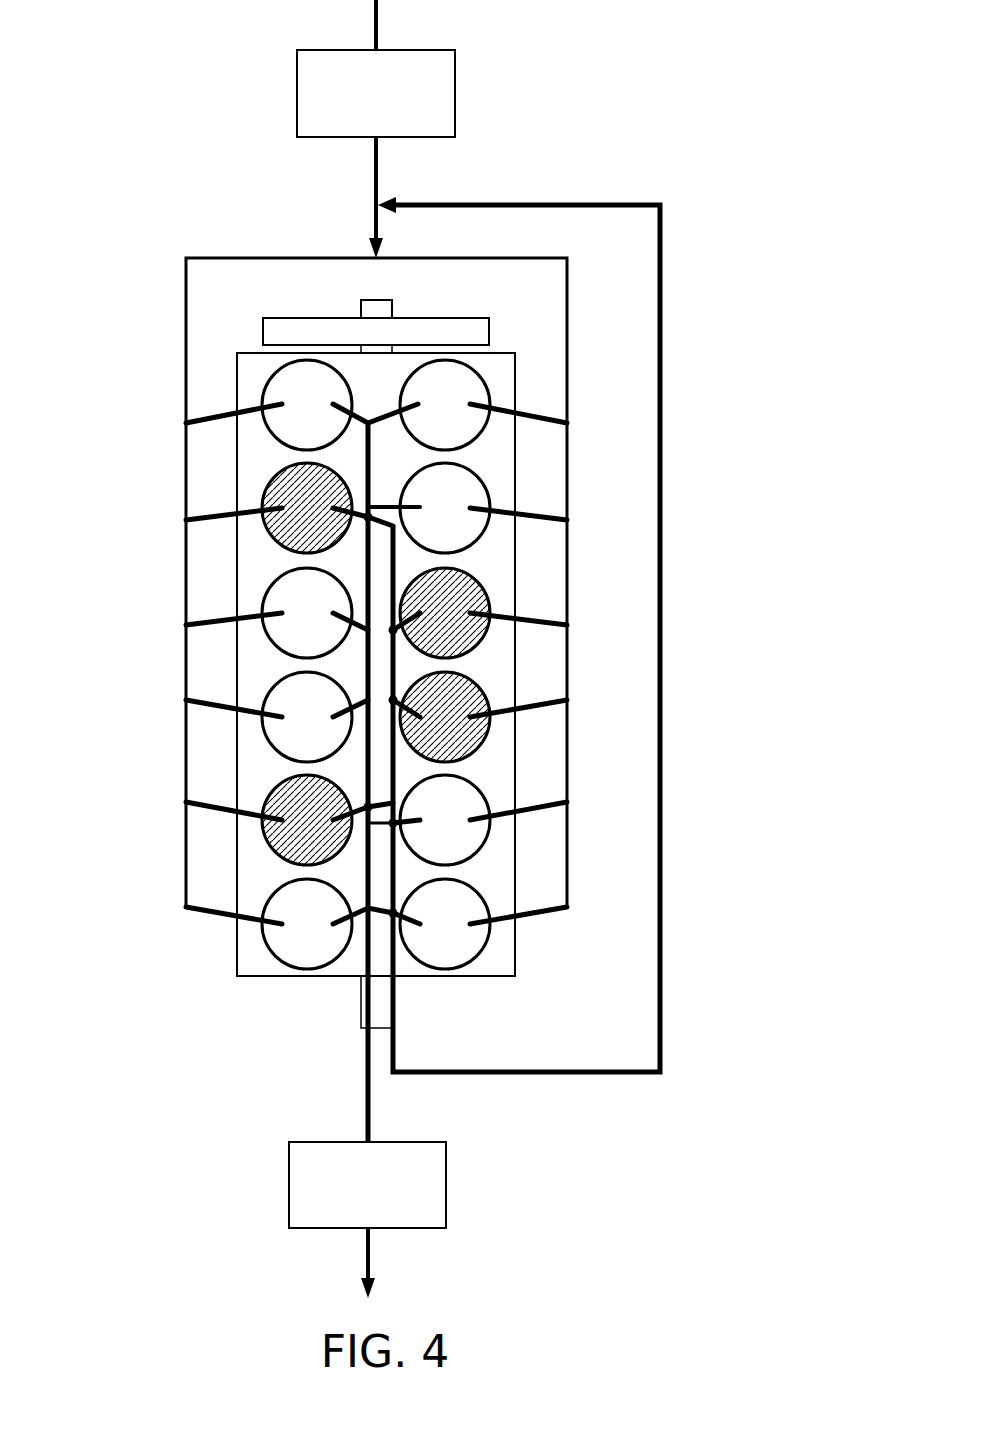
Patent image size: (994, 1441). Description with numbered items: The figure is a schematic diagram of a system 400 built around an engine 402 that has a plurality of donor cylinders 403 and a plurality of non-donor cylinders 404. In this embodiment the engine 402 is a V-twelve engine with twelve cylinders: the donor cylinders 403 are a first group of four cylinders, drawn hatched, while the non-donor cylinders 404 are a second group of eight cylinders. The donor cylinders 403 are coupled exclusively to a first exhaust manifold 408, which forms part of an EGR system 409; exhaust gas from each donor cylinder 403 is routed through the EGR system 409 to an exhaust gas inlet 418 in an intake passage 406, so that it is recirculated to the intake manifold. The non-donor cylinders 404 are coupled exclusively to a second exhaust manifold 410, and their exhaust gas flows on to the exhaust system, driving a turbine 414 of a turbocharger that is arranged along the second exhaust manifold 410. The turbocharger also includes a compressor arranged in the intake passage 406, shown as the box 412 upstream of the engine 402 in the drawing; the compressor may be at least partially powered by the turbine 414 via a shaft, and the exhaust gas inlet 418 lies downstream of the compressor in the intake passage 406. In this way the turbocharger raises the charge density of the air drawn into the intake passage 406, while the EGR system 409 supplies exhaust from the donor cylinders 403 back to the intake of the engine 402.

The system 400 is at (567, 50).
The engine 402 is at (237, 985).
The donor cylinders 403 is at (267, 495).
The non-donor cylinders 404 is at (267, 395).
The intake passage 406 is at (373, 230).
The first exhaust manifold 408 is at (448, 1075).
The EGR system 409 is at (687, 543).
The second exhaust manifold 410 is at (366, 1107).
The intake component / compressor 412 is at (357, 105).
The turbine 414 is at (348, 1197).
The exhaust gas inlet 418 is at (384, 198).